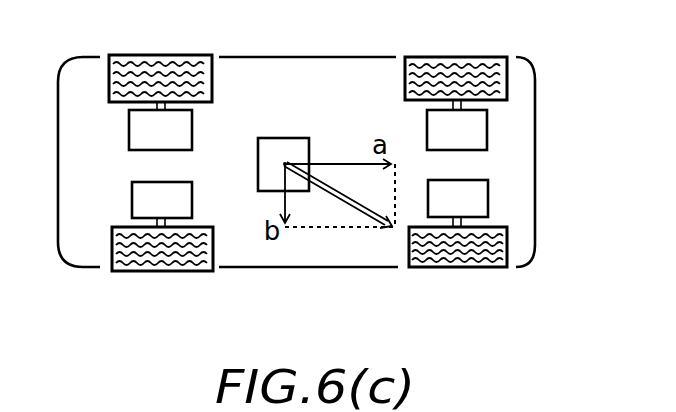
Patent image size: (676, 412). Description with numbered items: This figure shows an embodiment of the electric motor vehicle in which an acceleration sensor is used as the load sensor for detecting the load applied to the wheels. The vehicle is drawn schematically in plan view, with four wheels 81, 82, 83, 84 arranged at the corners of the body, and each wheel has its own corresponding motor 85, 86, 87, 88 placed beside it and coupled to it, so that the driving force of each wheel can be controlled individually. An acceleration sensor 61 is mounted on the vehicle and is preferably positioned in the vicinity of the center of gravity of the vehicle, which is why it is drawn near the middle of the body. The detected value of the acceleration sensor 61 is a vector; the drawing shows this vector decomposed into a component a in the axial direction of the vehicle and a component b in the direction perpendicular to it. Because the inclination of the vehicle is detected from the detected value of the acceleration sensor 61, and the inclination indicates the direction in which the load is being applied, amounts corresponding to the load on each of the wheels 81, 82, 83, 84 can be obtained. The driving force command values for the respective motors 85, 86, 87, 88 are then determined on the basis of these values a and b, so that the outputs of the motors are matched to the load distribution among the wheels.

The wheel 81 is at (166, 48).
The wheel 82 is at (172, 278).
The wheel 83 is at (465, 46).
The wheel 84 is at (458, 276).
The motor 85 is at (160, 130).
The motor 86 is at (162, 200).
The motor 87 is at (457, 130).
The motor 88 is at (458, 198).
The acceleration sensor 61 is at (285, 133).